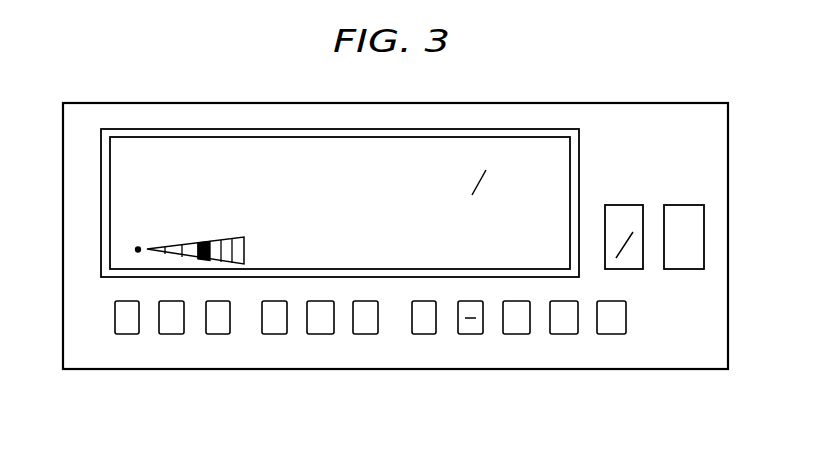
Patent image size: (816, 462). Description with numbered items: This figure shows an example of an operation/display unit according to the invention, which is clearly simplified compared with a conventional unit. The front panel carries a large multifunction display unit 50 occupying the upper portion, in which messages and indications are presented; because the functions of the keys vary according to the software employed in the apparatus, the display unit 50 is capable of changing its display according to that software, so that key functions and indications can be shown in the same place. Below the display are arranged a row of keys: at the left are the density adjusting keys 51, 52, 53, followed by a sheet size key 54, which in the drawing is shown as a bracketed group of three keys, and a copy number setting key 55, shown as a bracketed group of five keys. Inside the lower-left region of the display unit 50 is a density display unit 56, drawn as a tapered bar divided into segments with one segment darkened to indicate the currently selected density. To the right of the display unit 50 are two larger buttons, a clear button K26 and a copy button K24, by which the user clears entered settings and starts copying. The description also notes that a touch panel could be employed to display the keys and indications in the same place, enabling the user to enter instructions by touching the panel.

The multifunction display unit 50 is at (558, 146).
The density adjusting key 51 is at (116, 325).
The density adjusting key 52 is at (160, 319).
The density adjusting key 53 is at (206, 320).
The sheet size key 54 is at (378, 338).
The copy number setting key 55 is at (626, 339).
The density display unit 56 is at (135, 250).
The clear button K26 is at (628, 203).
The copy button K24 is at (690, 203).